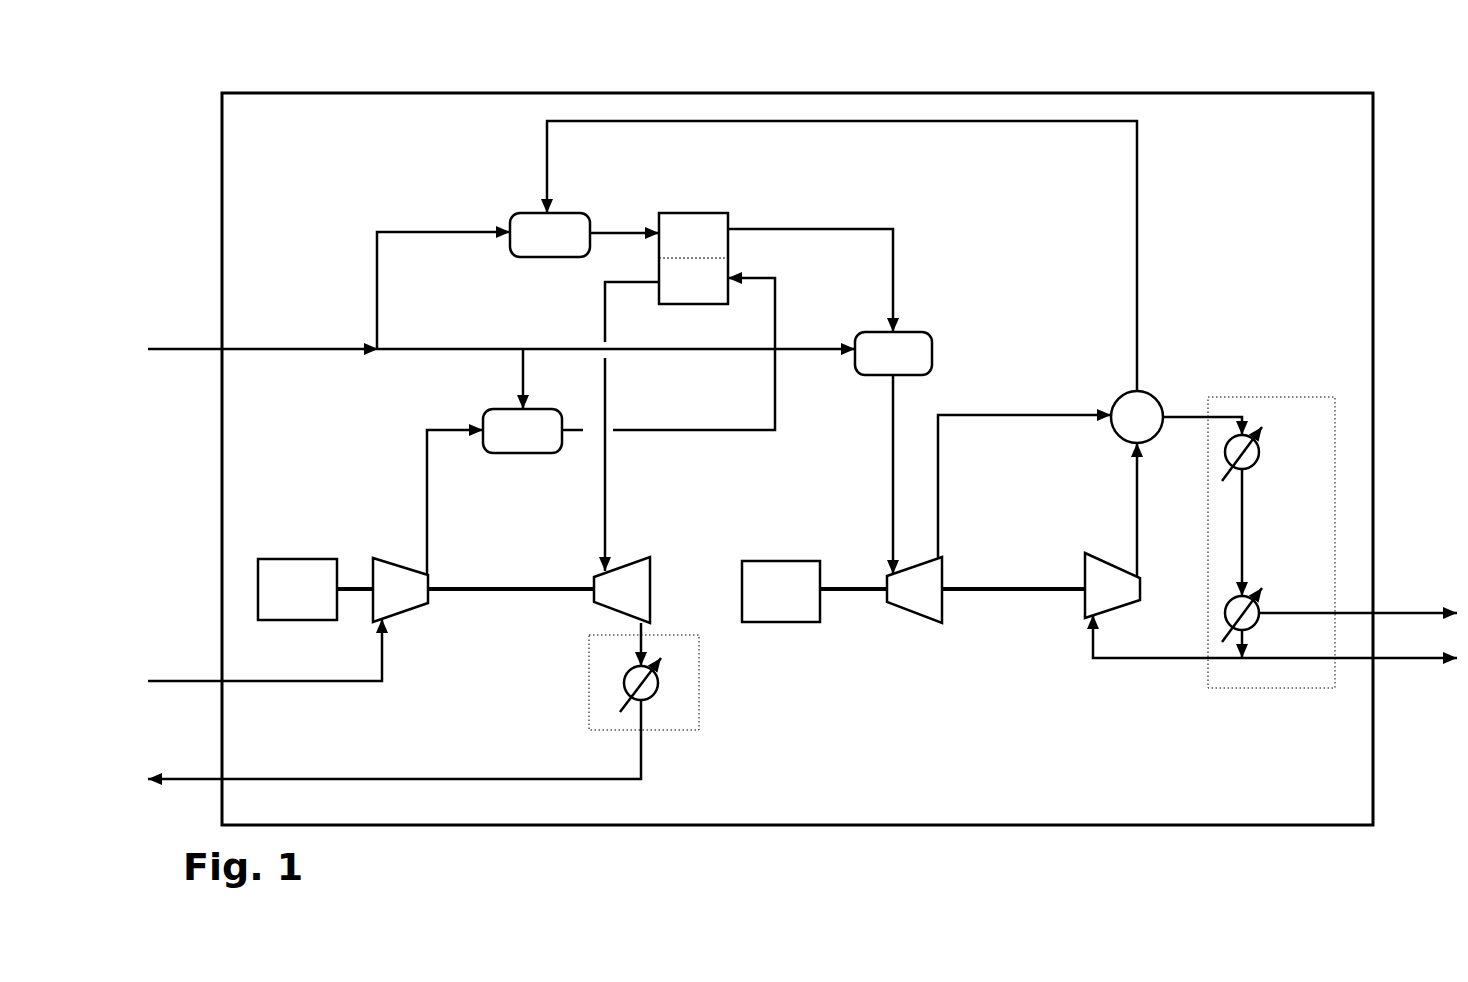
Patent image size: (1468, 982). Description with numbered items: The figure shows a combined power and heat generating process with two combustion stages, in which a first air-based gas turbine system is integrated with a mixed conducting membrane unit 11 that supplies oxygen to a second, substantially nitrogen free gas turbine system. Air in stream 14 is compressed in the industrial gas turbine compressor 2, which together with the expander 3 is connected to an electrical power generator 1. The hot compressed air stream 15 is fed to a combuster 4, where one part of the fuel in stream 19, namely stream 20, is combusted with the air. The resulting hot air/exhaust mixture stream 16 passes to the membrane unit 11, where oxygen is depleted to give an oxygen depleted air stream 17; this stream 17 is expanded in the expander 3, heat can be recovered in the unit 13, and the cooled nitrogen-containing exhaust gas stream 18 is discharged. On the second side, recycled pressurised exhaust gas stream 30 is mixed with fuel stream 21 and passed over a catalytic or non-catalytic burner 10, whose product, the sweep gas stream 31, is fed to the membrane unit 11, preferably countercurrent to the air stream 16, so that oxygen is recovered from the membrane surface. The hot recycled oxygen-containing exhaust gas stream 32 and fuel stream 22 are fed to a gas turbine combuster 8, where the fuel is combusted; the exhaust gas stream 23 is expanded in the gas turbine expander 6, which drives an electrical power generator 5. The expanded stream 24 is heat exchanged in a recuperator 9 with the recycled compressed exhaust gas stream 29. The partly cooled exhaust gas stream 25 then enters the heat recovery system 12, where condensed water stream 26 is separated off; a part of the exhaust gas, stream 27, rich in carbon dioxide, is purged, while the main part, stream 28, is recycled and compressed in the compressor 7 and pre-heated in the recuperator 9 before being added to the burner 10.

The electrical power generator 1 is at (315, 589).
The compressor of industrial gas turbine 2 is at (483, 590).
The expander of industrial gas turbine 3 is at (622, 590).
The combuster 4 is at (522, 431).
The electrical power generator 5 is at (814, 591).
The gas turbine expander 6 is at (986, 590).
The compressor 7 is at (1112, 585).
The gas turbine combuster 8 is at (893, 353).
The recuperator 9 is at (1137, 417).
The burner 10 is at (550, 235).
The membrane unit 11 is at (693, 258).
The heat recovery system 12 is at (1271, 542).
The heat recovery unit 13 is at (644, 682).
The air stream 14 is at (265, 656).
The hot compressed air stream 15 is at (448, 502).
The hot air/exhaust mixture stream 16 is at (668, 360).
The oxygen depleted air stream 17 is at (625, 426).
The cooled nitrogen-containing exhaust gas stream 18 is at (394, 707).
The fuel stream 19 is at (263, 349).
The fuel stream to combuster 20 is at (523, 379).
The fuel stream to burner 21 is at (443, 284).
The fuel stream to gas turbine combuster 22 is at (616, 350).
The exhaust gas stream 23 is at (893, 474).
The expanded exhaust gas stream 24 is at (1024, 479).
The partly cooled exhaust gas stream 25 is at (1202, 419).
The condensed water stream 26 is at (1358, 612).
The purged exhaust gas stream 27 is at (1349, 651).
The recycled exhaust gas stream 28 is at (1167, 642).
The recycled compressed exhaust gas stream 29 is at (1134, 510).
The recycled pressurised exhaust gas stream 30 is at (848, 256).
The sweep gas stream 31 is at (624, 233).
The hot recycled oxygen-containing exhaust gas stream 32 is at (817, 280).